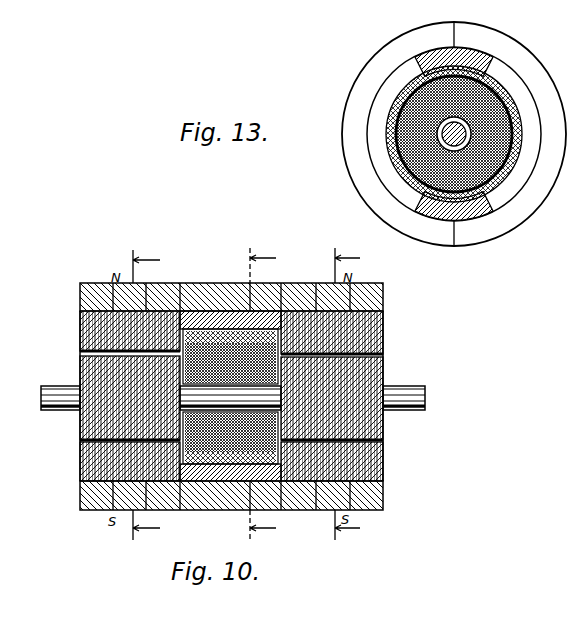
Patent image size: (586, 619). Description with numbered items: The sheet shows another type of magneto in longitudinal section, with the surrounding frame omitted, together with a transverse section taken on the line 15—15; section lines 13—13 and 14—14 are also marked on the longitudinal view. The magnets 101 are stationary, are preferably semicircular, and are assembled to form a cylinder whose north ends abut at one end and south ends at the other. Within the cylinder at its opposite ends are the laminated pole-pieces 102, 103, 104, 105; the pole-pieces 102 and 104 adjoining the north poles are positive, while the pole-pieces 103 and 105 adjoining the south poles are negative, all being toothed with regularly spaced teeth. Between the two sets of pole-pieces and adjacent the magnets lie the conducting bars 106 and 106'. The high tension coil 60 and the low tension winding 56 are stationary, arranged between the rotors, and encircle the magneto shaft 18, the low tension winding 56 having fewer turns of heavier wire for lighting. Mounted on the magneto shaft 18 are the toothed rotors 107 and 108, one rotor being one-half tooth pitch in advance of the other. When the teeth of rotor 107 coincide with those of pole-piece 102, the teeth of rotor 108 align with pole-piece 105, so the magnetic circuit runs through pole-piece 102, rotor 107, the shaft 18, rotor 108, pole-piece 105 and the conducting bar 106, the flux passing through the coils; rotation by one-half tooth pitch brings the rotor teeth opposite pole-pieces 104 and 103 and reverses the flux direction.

In FIG. 13, the magneto shaft 18 is at (442, 128).
In FIG. 10, the magneto shaft 18 is at (55, 378).
In FIG. 13, the low tension winding 56 is at (470, 190).
In FIG. 10, the low tension winding 56 is at (220, 330).
In FIG. 13, the high tension coil 60 is at (417, 186).
In FIG. 10, the high tension coil 60 is at (195, 318).
In FIG. 10, the magnets 101 is at (86, 284).
In FIG. 10, the pole-piece 102 is at (95, 323).
In FIG. 10, the pole-piece 103 is at (85, 462).
In FIG. 10, the pole-piece 104 is at (375, 320).
In FIG. 10, the pole-piece 105 is at (375, 455).
In FIG. 13, the conducting bar 106 is at (399, 62).
In FIG. 10, the conducting bar 106 is at (242, 296).
In FIG. 13, the conducting bar 106' is at (399, 200).
In FIG. 10, the conducting bar 106' is at (230, 505).
In FIG. 10, the rotor 107 is at (98, 402).
In FIG. 10, the rotor 108 is at (375, 362).
In FIG. 10, the section line 13 is at (156, 395).
In FIG. 10, the section line 14 is at (358, 394).
In FIG. 10, the section line 15 is at (271, 394).